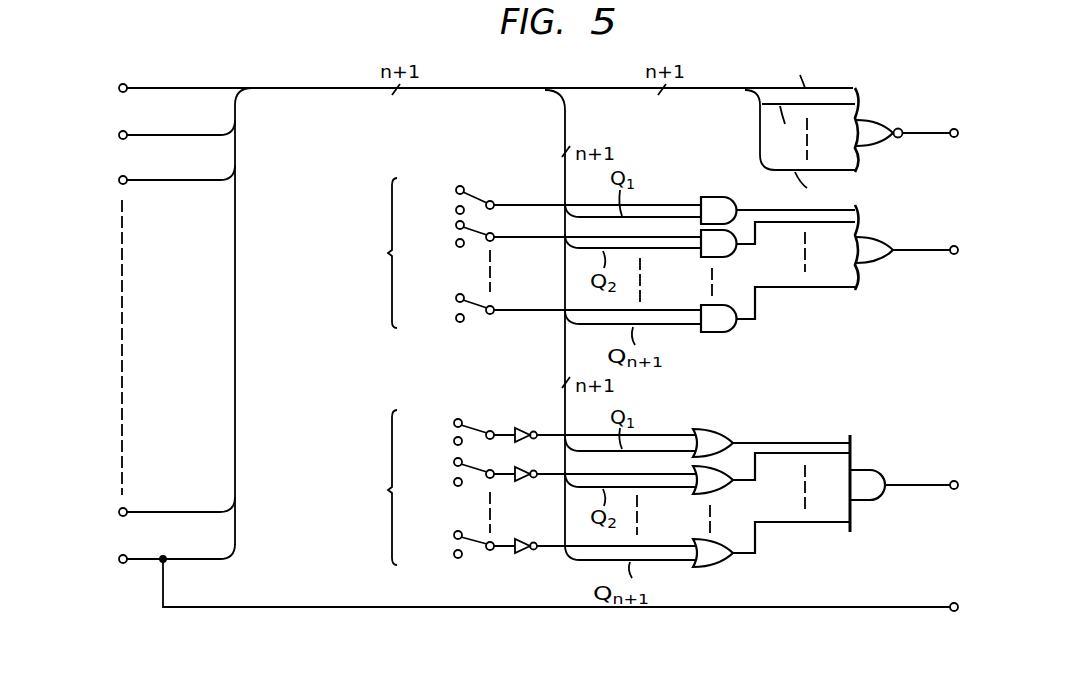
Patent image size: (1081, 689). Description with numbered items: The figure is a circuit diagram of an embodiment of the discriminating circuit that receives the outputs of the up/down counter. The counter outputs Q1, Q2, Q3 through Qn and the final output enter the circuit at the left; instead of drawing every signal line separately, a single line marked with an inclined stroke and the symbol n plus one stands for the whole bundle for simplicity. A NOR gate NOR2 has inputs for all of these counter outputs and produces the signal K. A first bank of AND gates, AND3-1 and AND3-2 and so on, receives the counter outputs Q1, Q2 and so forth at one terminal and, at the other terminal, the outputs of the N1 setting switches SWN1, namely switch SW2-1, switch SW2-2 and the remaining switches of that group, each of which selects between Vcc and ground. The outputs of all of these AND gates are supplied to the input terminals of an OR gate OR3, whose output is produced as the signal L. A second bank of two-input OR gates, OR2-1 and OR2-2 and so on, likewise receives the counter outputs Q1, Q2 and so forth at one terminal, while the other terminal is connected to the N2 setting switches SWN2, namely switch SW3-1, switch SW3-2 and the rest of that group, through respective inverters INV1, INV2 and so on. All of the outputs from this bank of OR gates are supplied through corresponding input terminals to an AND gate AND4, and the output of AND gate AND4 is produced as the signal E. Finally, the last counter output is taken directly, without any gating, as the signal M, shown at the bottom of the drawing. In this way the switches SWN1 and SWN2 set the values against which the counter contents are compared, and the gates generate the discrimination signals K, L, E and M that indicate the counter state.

The output Q1 is at (469, 89).
The output Q2 is at (160, 134).
The output Q3 is at (160, 179).
The output Qn is at (158, 511).
The N1 setting switches SWN1 is at (519, 267).
The N1 setting switch SW2-1 is at (471, 203).
The N1 setting switch SW2-2 is at (471, 244).
The N2 setting switches SWN2 is at (513, 488).
The N2 setting switch SW3-1 is at (473, 428).
The N2 setting switch SW3-2 is at (470, 472).
The inverter INV1 is at (527, 428).
The inverter INV2 is at (530, 482).
The AND gate AND3-1 is at (713, 197).
The AND gate AND3-2 is at (722, 248).
The two-input OR gate OR2-1 is at (707, 430).
The two-input OR gate OR2-2 is at (712, 487).
The NOR gate NOR2 is at (866, 128).
The OR gate OR3 is at (870, 244).
The AND gate AND4 is at (868, 475).
The signal K is at (922, 130).
The signal L is at (921, 253).
The signal E is at (921, 488).
The signal M is at (887, 606).